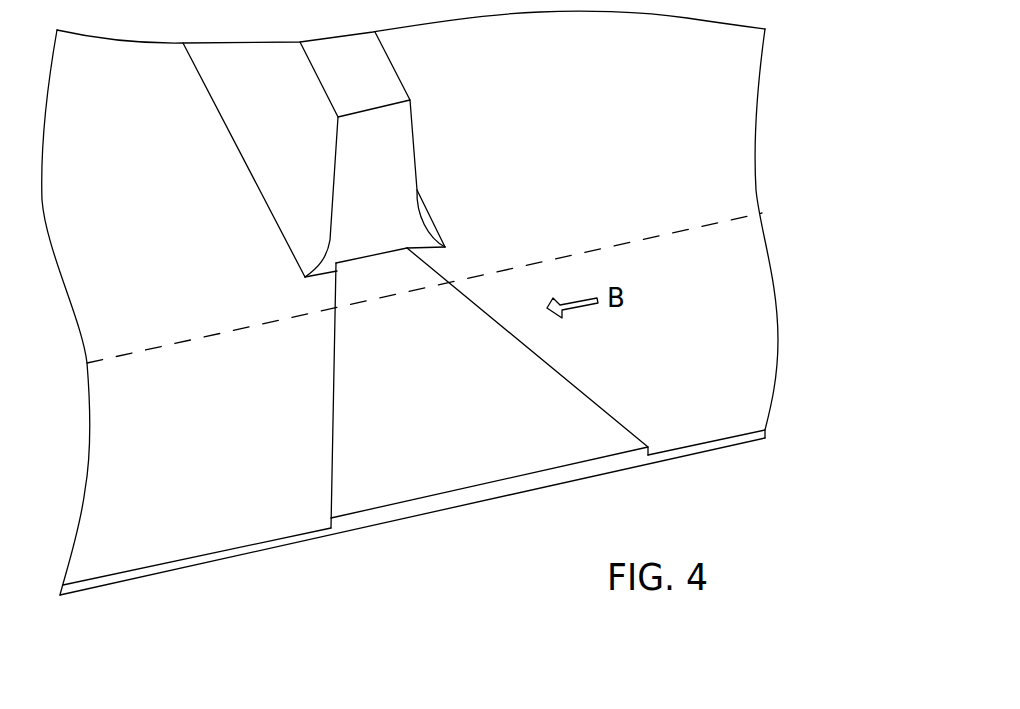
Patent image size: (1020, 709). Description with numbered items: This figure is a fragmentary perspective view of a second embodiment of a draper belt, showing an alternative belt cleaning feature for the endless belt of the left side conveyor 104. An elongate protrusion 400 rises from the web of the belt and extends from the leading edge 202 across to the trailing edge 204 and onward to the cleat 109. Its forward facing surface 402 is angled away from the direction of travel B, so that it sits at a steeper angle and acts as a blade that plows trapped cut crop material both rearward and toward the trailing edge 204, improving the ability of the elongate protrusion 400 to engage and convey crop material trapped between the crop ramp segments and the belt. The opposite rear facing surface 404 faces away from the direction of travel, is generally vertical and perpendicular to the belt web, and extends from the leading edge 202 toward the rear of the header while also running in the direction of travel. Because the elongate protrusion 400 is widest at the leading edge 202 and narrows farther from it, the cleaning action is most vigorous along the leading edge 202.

The left side conveyor 104 is at (690, 285).
The cleat 109 is at (387, 155).
The leading edge 202 is at (473, 495).
The trailing edge 204 is at (627, 240).
The elongate protrusion 400 is at (450, 423).
The forward facing surface 402 is at (328, 437).
The rear facing surface 404 is at (602, 370).